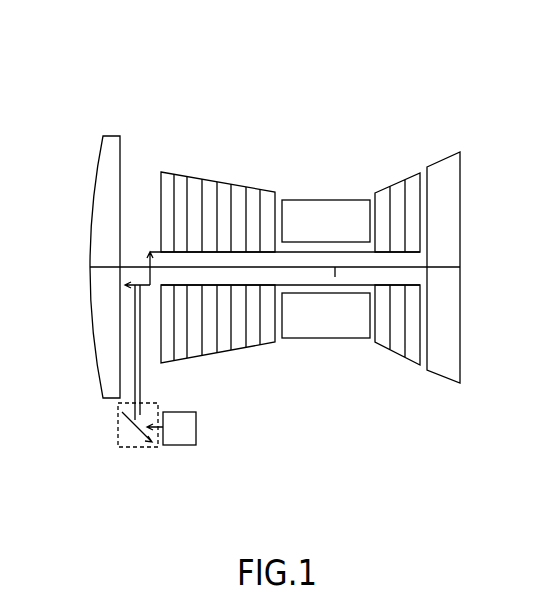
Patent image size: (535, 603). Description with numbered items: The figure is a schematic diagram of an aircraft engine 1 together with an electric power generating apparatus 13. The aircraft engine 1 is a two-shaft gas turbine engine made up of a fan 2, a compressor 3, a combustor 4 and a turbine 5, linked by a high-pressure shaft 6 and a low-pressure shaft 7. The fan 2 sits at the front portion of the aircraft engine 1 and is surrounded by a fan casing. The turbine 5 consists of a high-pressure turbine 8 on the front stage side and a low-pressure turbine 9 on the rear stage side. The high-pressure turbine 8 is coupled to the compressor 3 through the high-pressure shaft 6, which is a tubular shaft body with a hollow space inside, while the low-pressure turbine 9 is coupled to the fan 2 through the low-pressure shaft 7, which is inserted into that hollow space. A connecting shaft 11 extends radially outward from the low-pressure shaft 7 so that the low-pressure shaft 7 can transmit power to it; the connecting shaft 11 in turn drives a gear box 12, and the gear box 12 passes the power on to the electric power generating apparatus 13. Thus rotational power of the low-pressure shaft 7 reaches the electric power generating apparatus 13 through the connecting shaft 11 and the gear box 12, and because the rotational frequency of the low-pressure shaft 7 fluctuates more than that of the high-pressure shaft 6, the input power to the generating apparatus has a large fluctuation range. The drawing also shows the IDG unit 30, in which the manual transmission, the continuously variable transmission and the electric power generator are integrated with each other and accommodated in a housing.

The aircraft engine 1 is at (399, 88).
The fan 2 is at (112, 136).
The compressor 3 is at (197, 173).
The combustor 4 is at (293, 338).
The turbine 5 is at (415, 309).
The high-pressure shaft 6 is at (308, 293).
The low-pressure shaft 7 is at (335, 285).
The high-pressure turbine 8 is at (398, 358).
The low-pressure turbine 9 is at (441, 288).
The connecting shaft 11 is at (138, 330).
The gear box 12 is at (125, 447).
The electric power generating apparatus 13 is at (211, 455).
The IDG unit 30 is at (172, 447).